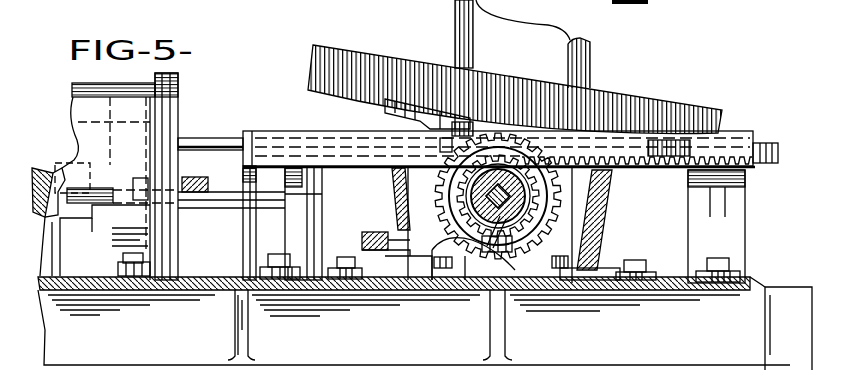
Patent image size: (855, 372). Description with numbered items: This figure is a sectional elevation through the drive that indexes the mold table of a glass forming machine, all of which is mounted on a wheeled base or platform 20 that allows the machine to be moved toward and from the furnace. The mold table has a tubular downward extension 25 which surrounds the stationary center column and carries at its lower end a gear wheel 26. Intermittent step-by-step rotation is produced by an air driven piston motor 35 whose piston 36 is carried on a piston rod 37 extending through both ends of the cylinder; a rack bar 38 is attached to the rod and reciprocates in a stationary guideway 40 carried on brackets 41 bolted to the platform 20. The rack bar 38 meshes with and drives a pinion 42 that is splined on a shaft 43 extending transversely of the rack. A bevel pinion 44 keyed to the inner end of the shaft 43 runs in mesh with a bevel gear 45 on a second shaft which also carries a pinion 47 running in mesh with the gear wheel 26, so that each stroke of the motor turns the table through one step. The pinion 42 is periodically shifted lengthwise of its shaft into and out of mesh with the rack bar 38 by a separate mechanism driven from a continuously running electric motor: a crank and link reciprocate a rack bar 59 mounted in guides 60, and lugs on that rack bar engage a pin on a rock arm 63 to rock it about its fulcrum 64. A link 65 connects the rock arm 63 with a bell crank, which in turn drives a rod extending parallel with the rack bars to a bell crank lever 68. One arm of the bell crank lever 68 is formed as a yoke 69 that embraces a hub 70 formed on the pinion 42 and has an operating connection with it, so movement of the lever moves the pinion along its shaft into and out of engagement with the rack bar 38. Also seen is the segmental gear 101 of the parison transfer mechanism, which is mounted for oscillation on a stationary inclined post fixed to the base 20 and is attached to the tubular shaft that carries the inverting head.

The wheeled base or platform 20 is at (425, 323).
The tubular downward extension 25 is at (591, 48).
The gear wheel 26 is at (360, 55).
The air driven piston motor 35 is at (75, 110).
The piston 36 is at (123, 88).
The piston rod 37 is at (223, 142).
The rack bar 38 is at (767, 143).
The stationary guideway 40 is at (295, 131).
The bracket 41 is at (304, 186).
The pinion 42 is at (530, 204).
The shaft 43 is at (486, 252).
The bevel pinion 44 is at (588, 232).
The bevel gear 45 is at (400, 123).
The pinion 47 is at (530, 70).
The rack bar 59 is at (70, 176).
The guides 60 is at (105, 240).
The rock arm 63 is at (213, 212).
The fulcrum 64 is at (325, 196).
The link 65 is at (208, 185).
The bell crank lever 68 is at (380, 236).
The yoke 69 is at (446, 184).
The hub 70 is at (494, 262).
The segmental gear 101 is at (41, 166).